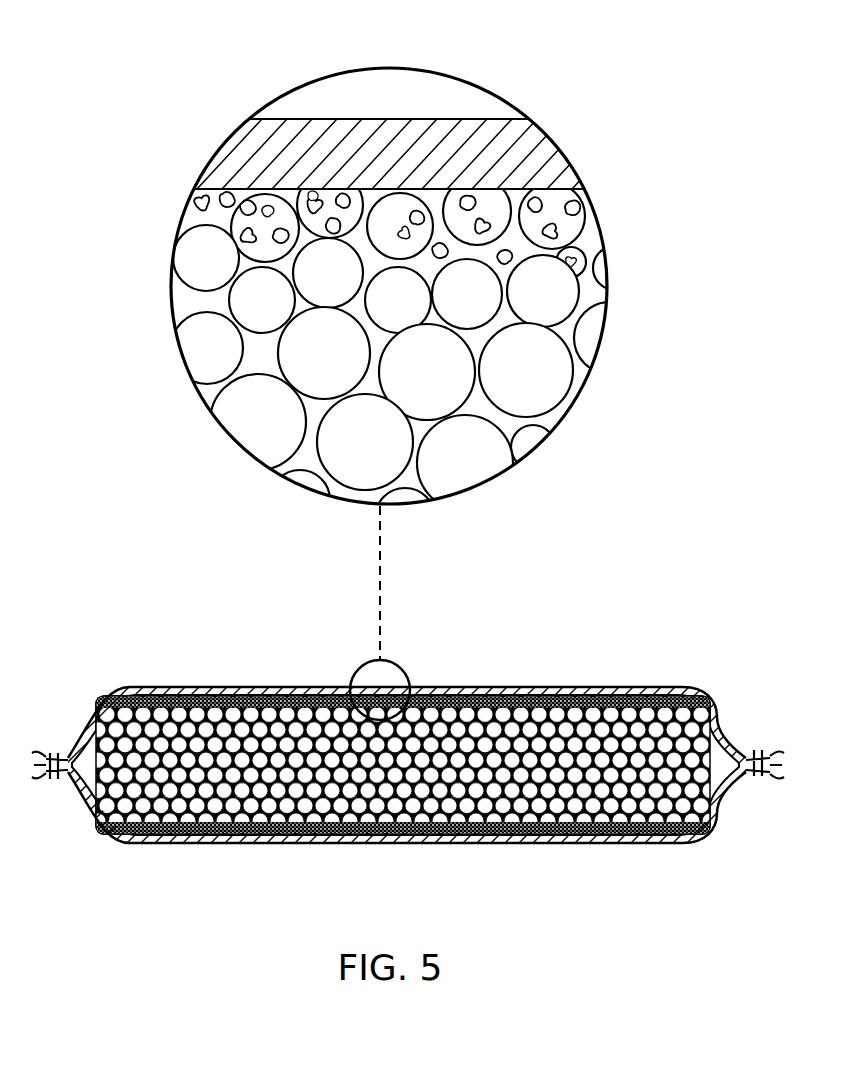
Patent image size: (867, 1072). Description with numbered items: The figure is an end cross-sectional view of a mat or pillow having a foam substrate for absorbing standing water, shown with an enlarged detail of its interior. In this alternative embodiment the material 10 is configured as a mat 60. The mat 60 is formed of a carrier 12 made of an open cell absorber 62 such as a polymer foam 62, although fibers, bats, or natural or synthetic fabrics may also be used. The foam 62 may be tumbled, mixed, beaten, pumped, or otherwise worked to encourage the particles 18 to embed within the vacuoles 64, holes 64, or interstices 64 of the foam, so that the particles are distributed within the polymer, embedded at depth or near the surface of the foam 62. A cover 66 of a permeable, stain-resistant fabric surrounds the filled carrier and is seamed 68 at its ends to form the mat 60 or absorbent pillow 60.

The material 10 is at (200, 82).
The carrier 12 is at (308, 366).
The particles 18 is at (545, 208).
The mat 60 is at (293, 848).
The open cell absorber 62 is at (515, 430).
The vacuoles 64 is at (550, 364).
The cover 66 is at (525, 137).
The seam 68 is at (752, 756).